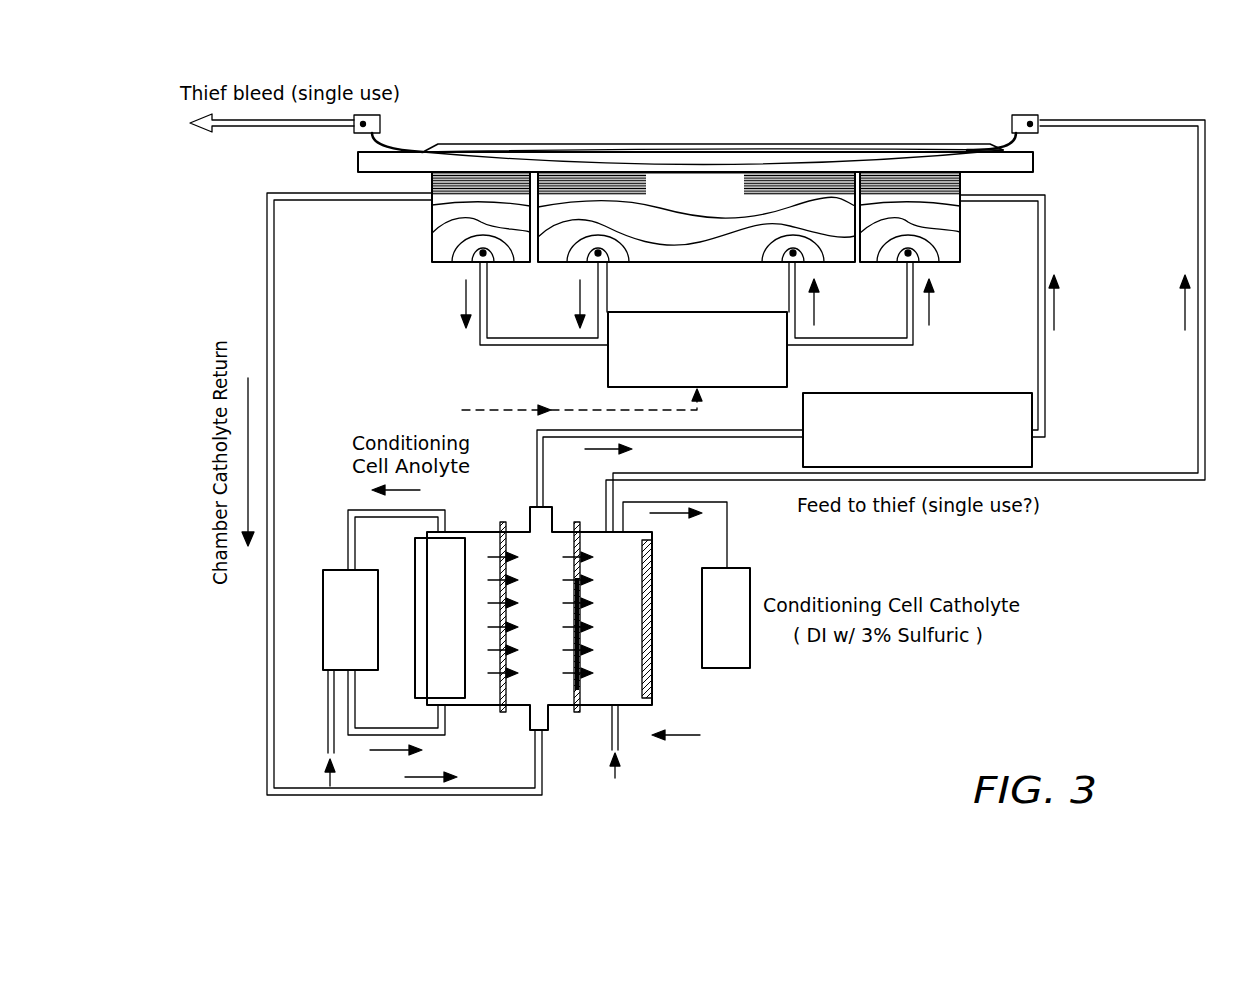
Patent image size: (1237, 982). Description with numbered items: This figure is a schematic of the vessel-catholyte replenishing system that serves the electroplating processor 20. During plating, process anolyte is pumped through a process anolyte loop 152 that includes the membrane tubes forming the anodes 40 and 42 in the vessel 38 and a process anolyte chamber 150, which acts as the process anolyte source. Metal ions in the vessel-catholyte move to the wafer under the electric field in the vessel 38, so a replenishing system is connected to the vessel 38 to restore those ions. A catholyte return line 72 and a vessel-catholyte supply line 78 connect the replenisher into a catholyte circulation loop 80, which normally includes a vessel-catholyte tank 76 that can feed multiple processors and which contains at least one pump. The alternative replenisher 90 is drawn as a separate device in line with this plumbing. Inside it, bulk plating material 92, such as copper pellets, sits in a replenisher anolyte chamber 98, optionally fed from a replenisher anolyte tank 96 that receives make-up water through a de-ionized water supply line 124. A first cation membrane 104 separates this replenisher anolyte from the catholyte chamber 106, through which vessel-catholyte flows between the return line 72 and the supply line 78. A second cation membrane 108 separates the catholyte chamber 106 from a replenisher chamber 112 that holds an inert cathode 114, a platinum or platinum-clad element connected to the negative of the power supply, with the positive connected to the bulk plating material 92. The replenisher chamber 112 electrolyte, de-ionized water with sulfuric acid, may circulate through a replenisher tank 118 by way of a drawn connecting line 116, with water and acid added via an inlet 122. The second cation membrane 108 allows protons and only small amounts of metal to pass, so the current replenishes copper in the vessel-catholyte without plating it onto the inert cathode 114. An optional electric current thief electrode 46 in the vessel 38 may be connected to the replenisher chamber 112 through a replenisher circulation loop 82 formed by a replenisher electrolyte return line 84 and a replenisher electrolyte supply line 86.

The processor 20 is at (655, 142).
The vessel 38 is at (432, 213).
The anode 40 is at (792, 257).
The anode 42 is at (480, 258).
The electric current thief electrode 46 is at (362, 134).
The catholyte return line 72 is at (276, 378).
The vessel-catholyte tank 76 is at (940, 405).
The vessel-catholyte supply line 78 is at (1046, 378).
The catholyte circulation loop 80 is at (1049, 357).
The replenisher circulation loop 82 is at (1066, 490).
The replenisher electrolyte return line 84 is at (257, 128).
The replenisher electrolyte supply line 86 is at (1197, 212).
The alternative replenisher 90 is at (347, 525).
The bulk plating material 92 is at (428, 565).
The replenisher anolyte tank 96 is at (342, 617).
The replenisher anolyte chamber 98 is at (478, 548).
The first cation membrane 104 is at (503, 716).
The catholyte chamber 106 is at (560, 716).
The second cation membrane 108 is at (577, 716).
The replenisher chamber 112 is at (622, 708).
The inert cathode 114 is at (650, 694).
The catholyte outlet line 116 is at (729, 548).
The replenisher tank 118 is at (746, 650).
The inlet 122 is at (650, 810).
The de-ionized water supply line 124 is at (322, 772).
The process anolyte chamber 150 is at (607, 368).
The process anolyte loop 152 is at (479, 338).